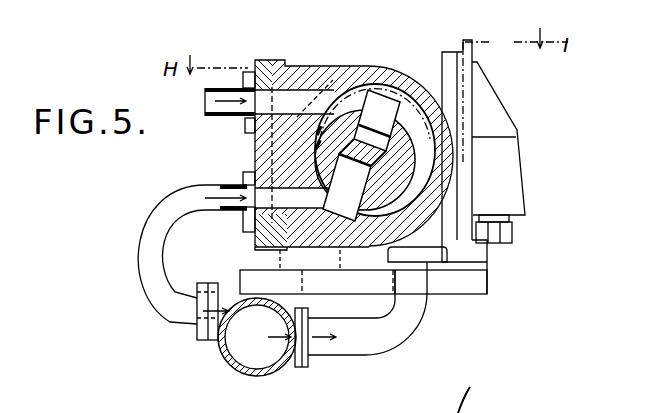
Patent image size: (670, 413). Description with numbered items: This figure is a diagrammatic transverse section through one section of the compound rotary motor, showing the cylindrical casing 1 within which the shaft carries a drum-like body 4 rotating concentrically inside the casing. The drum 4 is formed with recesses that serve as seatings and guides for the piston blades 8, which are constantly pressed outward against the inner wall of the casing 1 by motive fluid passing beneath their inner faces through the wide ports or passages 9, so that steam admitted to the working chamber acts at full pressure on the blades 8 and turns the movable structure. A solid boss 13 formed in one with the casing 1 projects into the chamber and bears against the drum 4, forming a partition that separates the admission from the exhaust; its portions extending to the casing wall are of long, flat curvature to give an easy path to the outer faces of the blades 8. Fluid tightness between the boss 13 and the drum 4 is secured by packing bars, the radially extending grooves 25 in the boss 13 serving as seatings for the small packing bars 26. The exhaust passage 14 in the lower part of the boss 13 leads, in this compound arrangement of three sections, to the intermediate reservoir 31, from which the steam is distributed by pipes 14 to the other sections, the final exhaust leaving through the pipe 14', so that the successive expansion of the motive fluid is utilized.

The cylindrical casing 1 is at (452, 227).
The drum-like body 4 is at (376, 161).
The piston blade 8 is at (393, 92).
The port 9 is at (398, 120).
The boss 13 is at (462, 203).
The exhaust passage 14 is at (192, 268).
The inlet pipe 14' is at (208, 105).
The groove 25 is at (247, 214).
The small packing bar 26 is at (313, 126).
The intermediate reservoir 31 is at (273, 347).